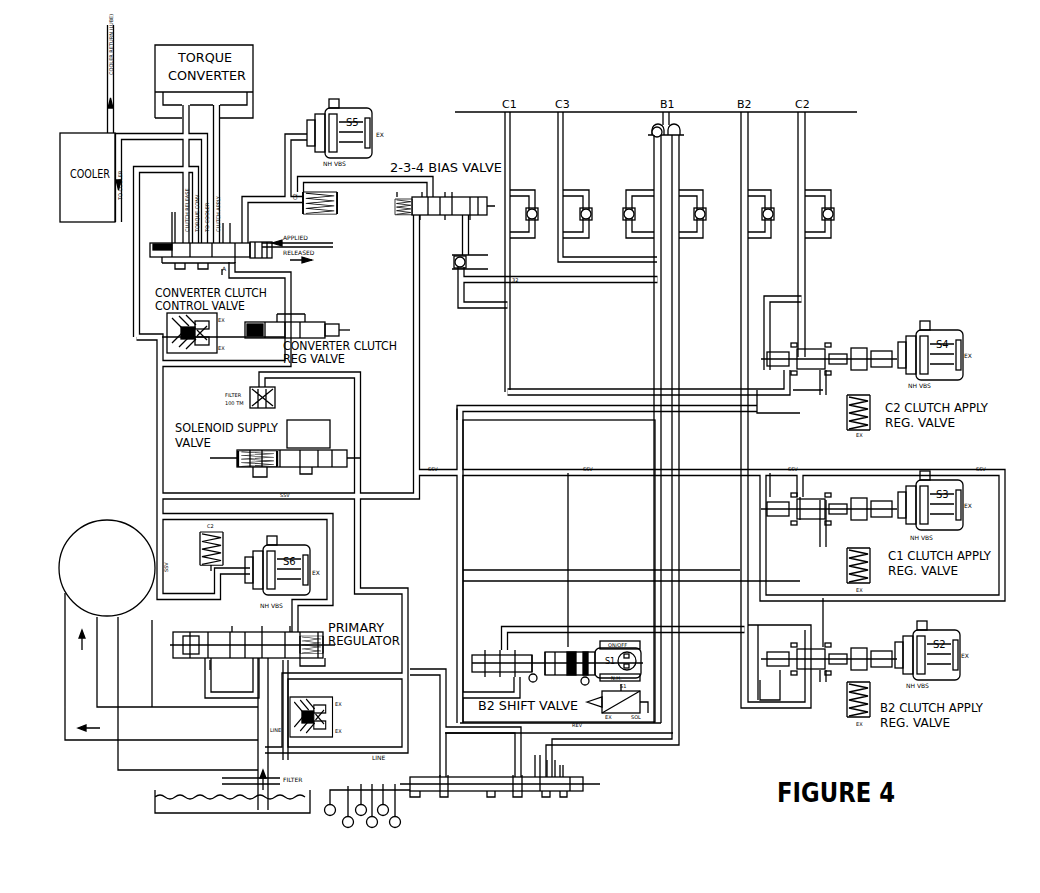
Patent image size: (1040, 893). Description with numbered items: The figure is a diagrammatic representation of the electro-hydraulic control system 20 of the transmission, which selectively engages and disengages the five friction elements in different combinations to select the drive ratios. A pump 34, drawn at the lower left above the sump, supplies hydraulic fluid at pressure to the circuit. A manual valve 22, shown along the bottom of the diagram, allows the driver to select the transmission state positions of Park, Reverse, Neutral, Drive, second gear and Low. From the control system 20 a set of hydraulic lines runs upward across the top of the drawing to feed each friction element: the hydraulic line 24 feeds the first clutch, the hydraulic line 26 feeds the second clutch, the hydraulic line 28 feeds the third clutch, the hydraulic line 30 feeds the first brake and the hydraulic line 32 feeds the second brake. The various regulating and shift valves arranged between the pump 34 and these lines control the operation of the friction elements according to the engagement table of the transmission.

The control system 20 is at (803, 78).
The manual valve 22 is at (538, 813).
The hydraulic line 24 is at (503, 145).
The hydraulic line 26 is at (802, 160).
The hydraulic line 28 is at (568, 177).
The hydraulic line 30 is at (678, 135).
The hydraulic line 32 is at (738, 175).
The pump 34 is at (88, 553).